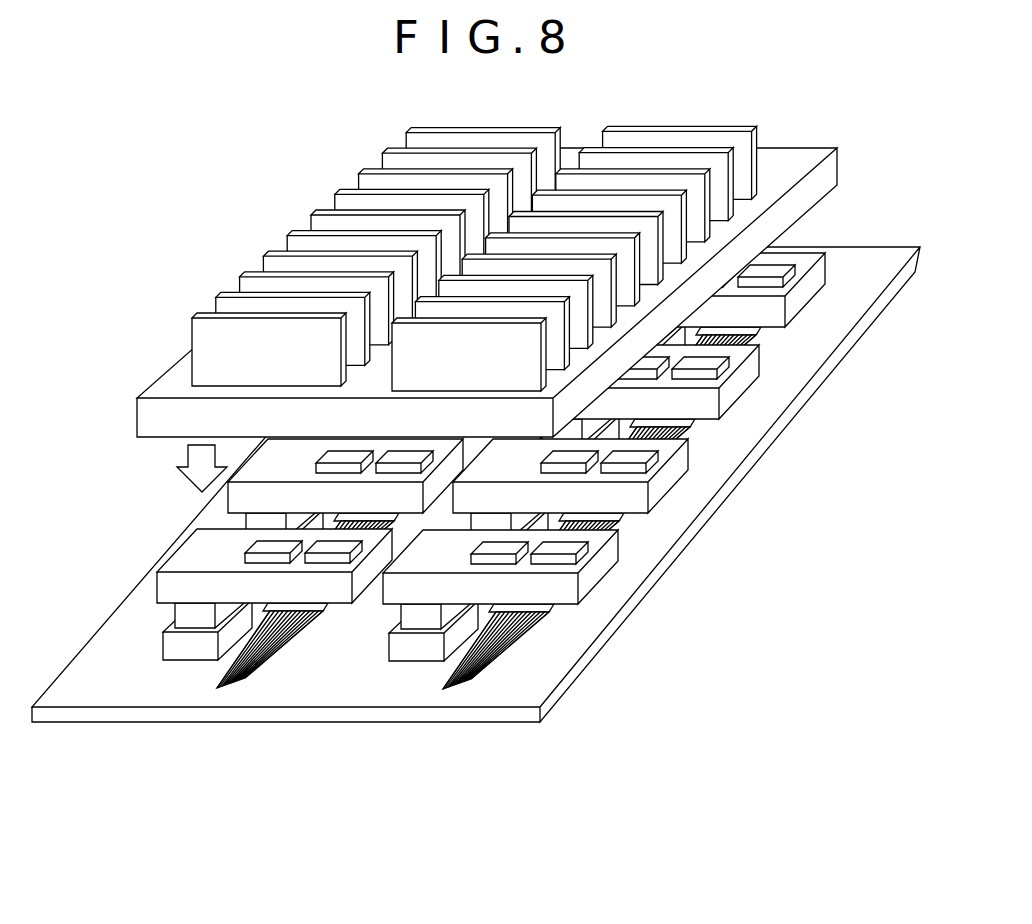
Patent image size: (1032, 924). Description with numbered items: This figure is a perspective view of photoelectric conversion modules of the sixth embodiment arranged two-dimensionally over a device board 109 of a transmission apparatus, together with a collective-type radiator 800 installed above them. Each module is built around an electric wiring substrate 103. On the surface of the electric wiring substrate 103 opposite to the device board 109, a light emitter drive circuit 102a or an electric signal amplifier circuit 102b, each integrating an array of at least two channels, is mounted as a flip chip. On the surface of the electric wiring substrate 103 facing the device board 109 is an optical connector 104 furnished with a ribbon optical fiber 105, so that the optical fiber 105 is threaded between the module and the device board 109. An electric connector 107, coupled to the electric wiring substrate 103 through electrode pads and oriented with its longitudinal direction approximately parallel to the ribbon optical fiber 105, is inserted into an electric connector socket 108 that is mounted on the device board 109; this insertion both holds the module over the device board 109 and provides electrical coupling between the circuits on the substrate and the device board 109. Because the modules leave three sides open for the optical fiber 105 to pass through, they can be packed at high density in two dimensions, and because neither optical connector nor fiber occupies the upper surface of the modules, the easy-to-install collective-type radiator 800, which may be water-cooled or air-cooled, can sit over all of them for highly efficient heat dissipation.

The collective-type radiator 800 is at (192, 353).
The light emitter drive circuit 102a is at (230, 431).
The electric signal amplifier circuit 102b is at (187, 459).
The electric wiring substrate 103 is at (237, 538).
The optical connector 104 is at (323, 651).
The ribbon optical fiber 105 is at (280, 695).
The electric connector 107 is at (148, 680).
The electric connector socket 108 is at (178, 697).
The device board 109 is at (476, 484).